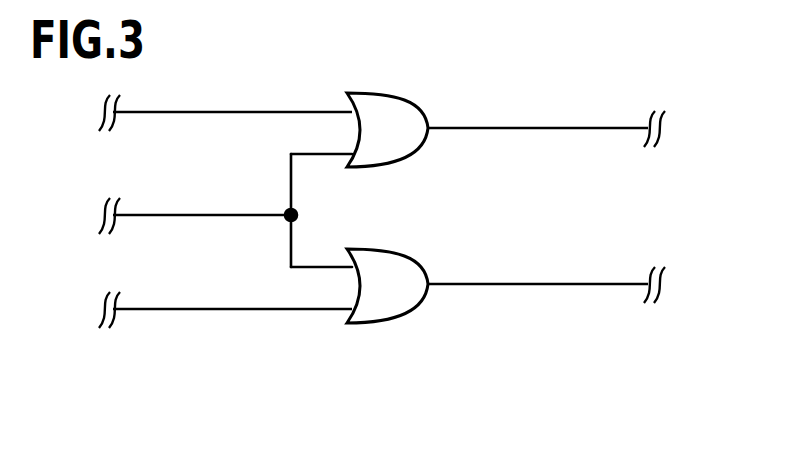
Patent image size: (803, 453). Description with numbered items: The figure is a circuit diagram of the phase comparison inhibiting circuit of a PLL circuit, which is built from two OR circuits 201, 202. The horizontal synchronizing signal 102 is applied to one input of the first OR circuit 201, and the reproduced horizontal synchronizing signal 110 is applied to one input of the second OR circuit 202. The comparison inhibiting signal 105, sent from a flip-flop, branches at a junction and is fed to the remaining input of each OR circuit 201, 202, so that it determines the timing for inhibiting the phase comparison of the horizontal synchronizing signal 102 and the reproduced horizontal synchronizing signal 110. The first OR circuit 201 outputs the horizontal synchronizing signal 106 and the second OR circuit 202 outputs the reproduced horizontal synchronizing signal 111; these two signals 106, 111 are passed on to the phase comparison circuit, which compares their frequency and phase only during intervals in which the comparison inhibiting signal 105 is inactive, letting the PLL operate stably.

The horizontal synchronizing signal 102 is at (160, 112).
The comparison inhibiting signal 105 is at (160, 215).
The reproduced horizontal synchronizing signal 110 is at (160, 309).
The OR circuit 201 is at (418, 112).
The OR circuit 202 is at (417, 308).
The horizontal synchronizing signal output 106 is at (552, 128).
The reproduced horizontal synchronizing signal output 111 is at (543, 284).